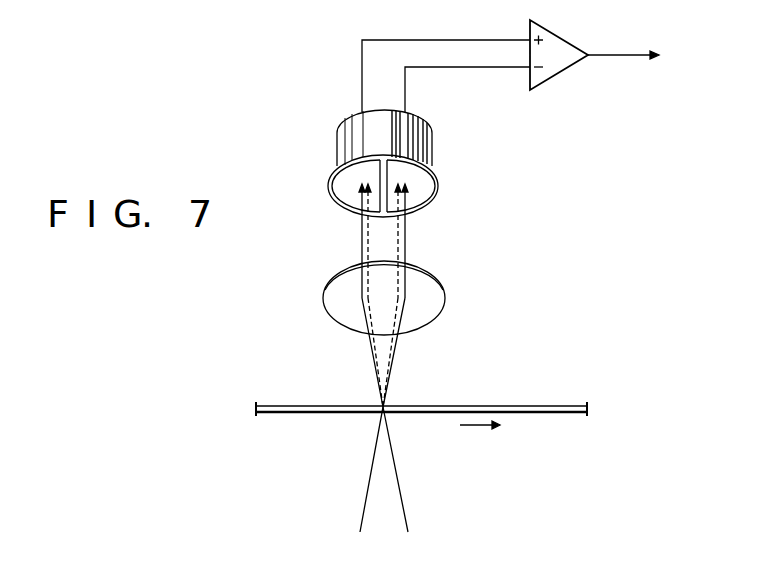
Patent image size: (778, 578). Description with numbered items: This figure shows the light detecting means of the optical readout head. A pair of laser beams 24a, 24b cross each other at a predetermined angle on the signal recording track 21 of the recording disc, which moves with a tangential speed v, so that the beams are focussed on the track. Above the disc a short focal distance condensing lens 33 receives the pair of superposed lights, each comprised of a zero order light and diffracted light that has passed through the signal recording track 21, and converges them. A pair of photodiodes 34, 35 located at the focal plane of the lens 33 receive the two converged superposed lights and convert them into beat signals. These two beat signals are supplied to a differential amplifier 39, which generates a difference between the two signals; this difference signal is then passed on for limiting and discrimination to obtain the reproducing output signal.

The concentrical tracks 21 is at (477, 406).
The laser beam 24a is at (368, 490).
The laser beam 24b is at (402, 490).
The short focal distance condensing lens 33 is at (437, 298).
The photodiode 34 is at (422, 182).
The photodiode 35 is at (343, 185).
The differential amplifier 39 is at (571, 49).